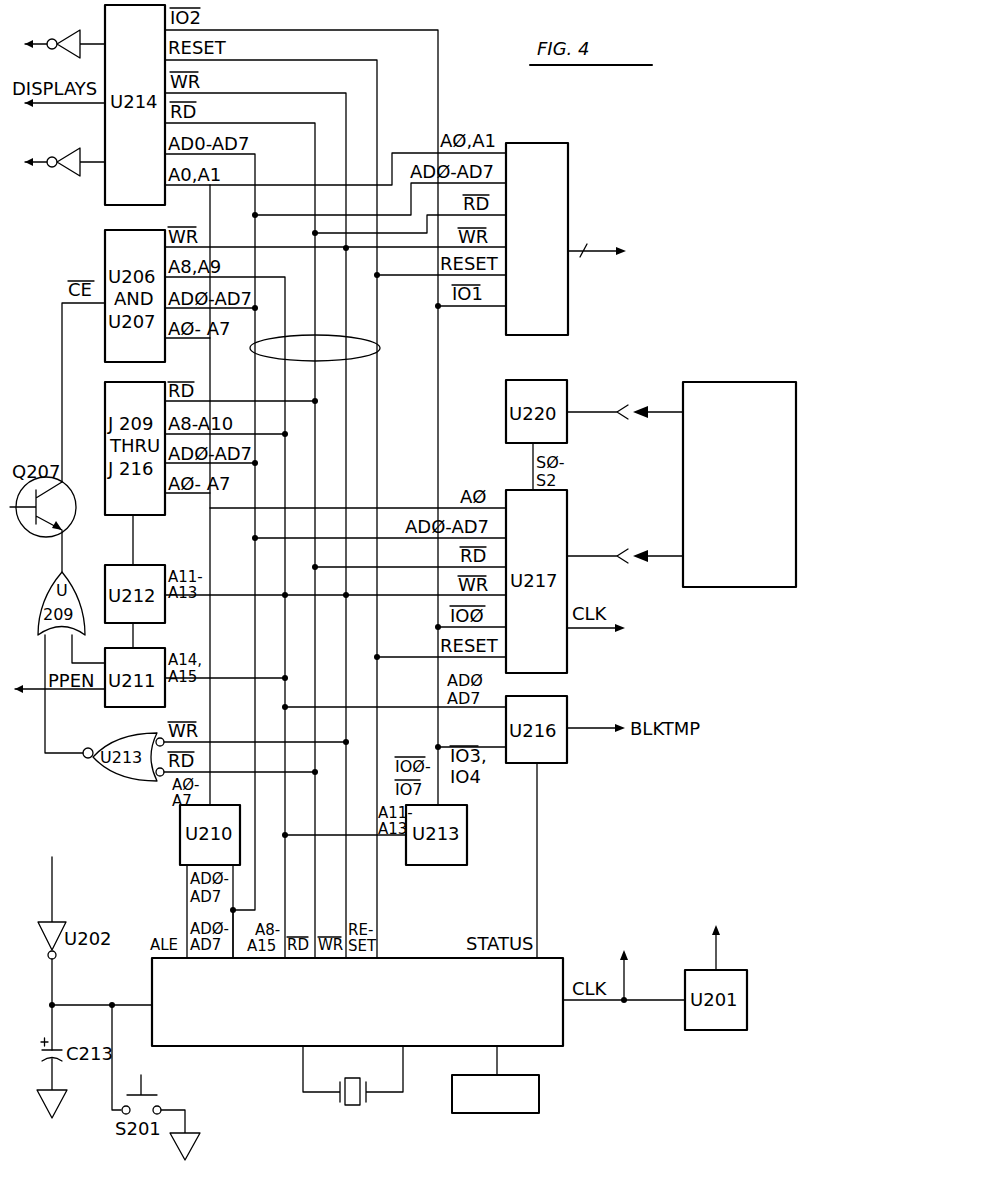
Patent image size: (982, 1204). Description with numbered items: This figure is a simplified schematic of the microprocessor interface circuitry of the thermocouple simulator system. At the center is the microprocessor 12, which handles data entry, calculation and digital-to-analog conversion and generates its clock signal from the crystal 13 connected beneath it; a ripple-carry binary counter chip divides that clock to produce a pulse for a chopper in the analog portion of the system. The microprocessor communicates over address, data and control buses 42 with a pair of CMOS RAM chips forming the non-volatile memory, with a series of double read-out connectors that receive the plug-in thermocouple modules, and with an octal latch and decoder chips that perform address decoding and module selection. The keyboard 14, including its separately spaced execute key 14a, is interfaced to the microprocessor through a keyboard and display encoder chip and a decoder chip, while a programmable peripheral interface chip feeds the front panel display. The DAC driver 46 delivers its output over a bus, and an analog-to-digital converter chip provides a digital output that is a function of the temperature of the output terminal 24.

The CPU 12 is at (495, 1014).
The crystal 13 is at (352, 1105).
The keyboard 14 is at (716, 382).
The execute key 14a is at (517, 1113).
The output terminal 24 is at (597, 262).
The address, data and control buses 42 is at (380, 348).
The DAC driver 46 is at (568, 152).